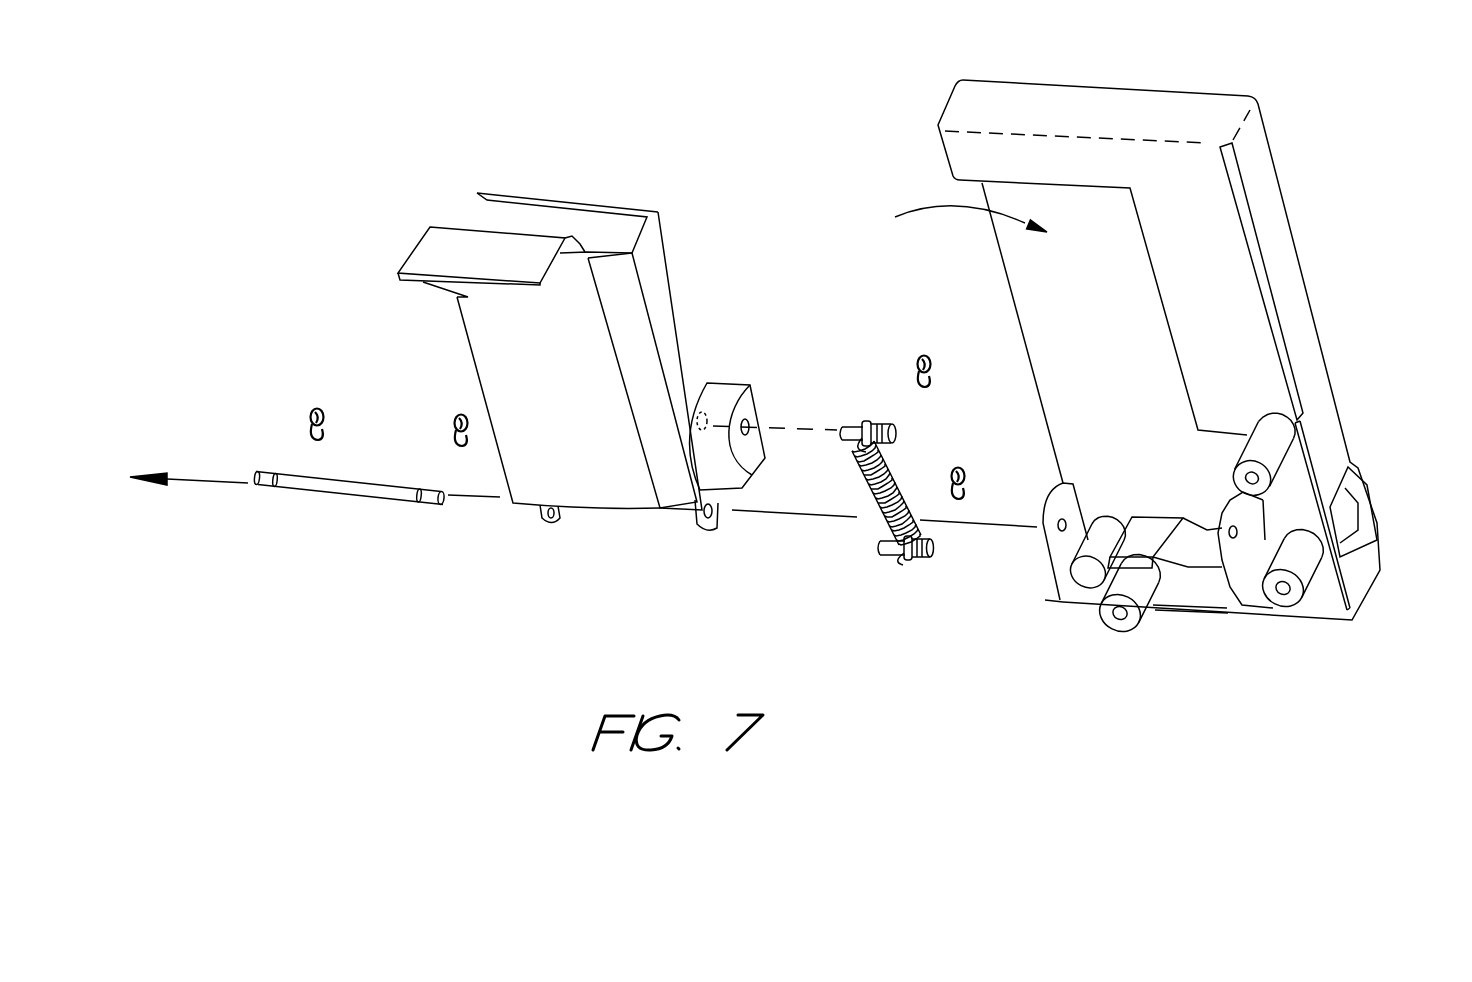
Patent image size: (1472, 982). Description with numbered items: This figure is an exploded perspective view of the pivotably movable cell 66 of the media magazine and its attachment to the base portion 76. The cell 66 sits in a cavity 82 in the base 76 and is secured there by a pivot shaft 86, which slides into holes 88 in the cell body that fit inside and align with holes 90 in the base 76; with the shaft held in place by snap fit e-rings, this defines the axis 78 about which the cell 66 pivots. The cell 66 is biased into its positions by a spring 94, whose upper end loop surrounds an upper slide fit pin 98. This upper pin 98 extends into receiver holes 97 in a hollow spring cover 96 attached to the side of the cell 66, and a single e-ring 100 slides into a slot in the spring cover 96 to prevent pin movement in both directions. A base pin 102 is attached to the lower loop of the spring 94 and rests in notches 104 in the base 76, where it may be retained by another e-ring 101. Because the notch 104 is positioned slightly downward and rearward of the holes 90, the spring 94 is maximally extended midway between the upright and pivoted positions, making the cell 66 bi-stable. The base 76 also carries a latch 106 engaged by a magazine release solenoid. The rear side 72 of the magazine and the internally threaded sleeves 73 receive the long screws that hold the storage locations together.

The pivotably movable cell 66 is at (560, 376).
The rear side 72 is at (315, 407).
The internally threaded sleeves 73 is at (1090, 573).
The base portion 76 is at (1263, 170).
The axis 78 is at (205, 477).
The cavity 82 is at (952, 219).
The pivot shaft 86 is at (332, 490).
The holes 88 is at (551, 523).
The holes 90 is at (1063, 483).
The spring 94 is at (875, 510).
The hollow spring cover 96 is at (710, 408).
The receiver holes 97 is at (745, 415).
The upper slide fit pin 98 is at (872, 422).
The e-ring 100 is at (929, 355).
The e-ring 101 is at (955, 466).
The base pin 102 is at (920, 560).
The notches 104 is at (1260, 580).
The latch 106 is at (1357, 480).